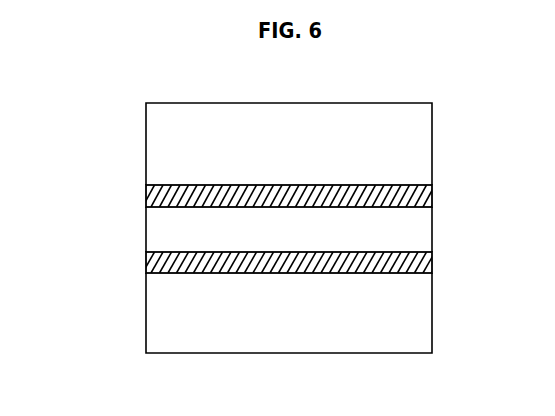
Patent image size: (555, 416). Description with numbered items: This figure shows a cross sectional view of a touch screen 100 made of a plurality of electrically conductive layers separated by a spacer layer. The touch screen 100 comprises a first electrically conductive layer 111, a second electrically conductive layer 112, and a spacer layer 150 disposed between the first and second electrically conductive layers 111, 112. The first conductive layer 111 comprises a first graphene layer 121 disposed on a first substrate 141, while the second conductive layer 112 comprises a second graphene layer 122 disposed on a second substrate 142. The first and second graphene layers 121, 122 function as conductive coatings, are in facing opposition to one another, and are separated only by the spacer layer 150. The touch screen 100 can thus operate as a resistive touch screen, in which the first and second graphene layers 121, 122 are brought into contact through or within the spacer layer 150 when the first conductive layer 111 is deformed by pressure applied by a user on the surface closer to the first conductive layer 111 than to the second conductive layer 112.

The touch screen 100 is at (112, 69).
The first electrically conductive layer 111 is at (140, 103).
The second electrically conductive layer 112 is at (140, 252).
The first substrate 141 is at (433, 145).
The first graphene layer 121 is at (433, 197).
The spacer layer 150 is at (433, 231).
The second graphene layer 122 is at (433, 262).
The second substrate 142 is at (433, 315).